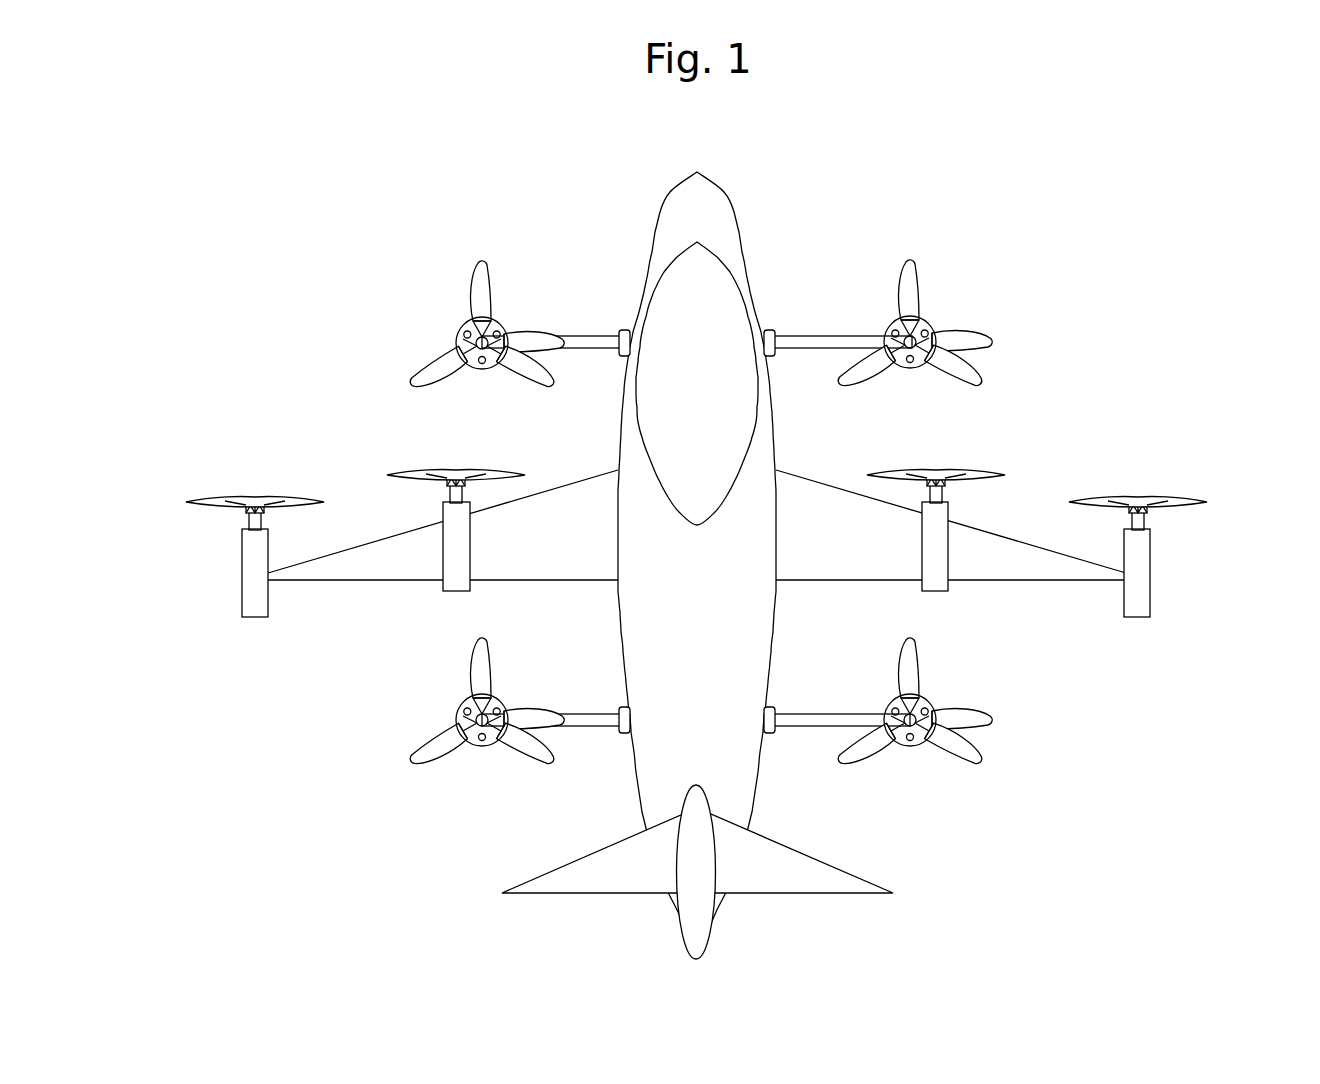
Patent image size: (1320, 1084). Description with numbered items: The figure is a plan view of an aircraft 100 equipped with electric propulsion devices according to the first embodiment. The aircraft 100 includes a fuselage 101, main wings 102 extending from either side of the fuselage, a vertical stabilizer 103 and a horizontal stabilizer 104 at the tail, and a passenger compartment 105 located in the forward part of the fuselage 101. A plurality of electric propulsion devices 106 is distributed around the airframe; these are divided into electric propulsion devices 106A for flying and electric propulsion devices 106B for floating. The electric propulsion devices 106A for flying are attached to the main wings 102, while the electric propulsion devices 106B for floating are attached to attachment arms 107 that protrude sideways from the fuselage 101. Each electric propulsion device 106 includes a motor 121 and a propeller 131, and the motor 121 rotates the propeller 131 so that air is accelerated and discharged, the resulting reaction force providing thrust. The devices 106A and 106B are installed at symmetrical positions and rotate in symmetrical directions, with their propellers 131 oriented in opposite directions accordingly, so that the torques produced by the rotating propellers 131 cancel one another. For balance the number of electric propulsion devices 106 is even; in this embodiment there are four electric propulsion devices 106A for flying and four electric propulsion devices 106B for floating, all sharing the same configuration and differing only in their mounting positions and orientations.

The aircraft 100 is at (893, 215).
The fuselage 101 is at (658, 240).
The main wings 102 is at (815, 497).
The vertical stabilizer 103 is at (703, 920).
The horizontal stabilizer 104 is at (795, 866).
The passenger compartment 105 is at (717, 285).
The electric propulsion device 106 is at (952, 268).
The electric propulsion device for flying 106A is at (705, 469).
The electric propulsion device for floating 106B is at (703, 491).
The attachment arm 107 is at (580, 342).
The motor 121 is at (1143, 591).
The propeller 131 is at (1098, 500).